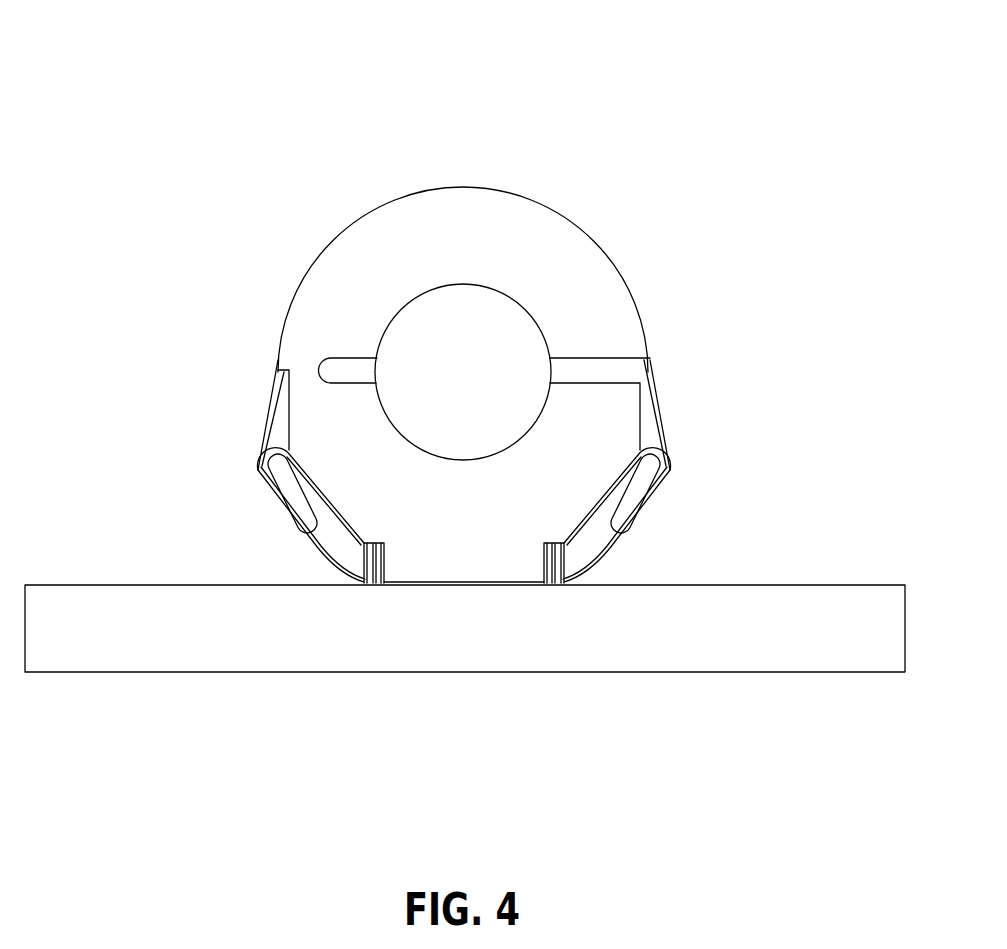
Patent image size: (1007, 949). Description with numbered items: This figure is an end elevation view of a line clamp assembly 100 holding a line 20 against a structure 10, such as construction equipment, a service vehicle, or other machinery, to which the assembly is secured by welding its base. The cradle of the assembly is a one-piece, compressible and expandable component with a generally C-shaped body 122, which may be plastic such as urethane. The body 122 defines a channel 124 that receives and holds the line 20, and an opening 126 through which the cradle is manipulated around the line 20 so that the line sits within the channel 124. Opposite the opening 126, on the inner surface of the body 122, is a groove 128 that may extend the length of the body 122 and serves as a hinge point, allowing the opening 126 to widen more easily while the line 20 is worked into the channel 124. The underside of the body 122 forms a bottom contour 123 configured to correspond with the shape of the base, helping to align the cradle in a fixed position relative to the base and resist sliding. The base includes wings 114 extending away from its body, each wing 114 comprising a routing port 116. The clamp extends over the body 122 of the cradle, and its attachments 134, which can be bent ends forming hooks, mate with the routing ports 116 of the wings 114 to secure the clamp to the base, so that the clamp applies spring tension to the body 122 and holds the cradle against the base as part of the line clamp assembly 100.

The line clamp assembly 100 is at (164, 55).
The structure 10 is at (96, 657).
The line 20 is at (463, 343).
The body 122 is at (568, 243).
The channel 124 is at (377, 332).
The opening 126 is at (583, 370).
The groove 128 is at (345, 368).
The bottom contour 123 is at (316, 478).
The attachments 134 is at (266, 453).
The routing ports 116 is at (298, 538).
The wings 114 is at (330, 537).